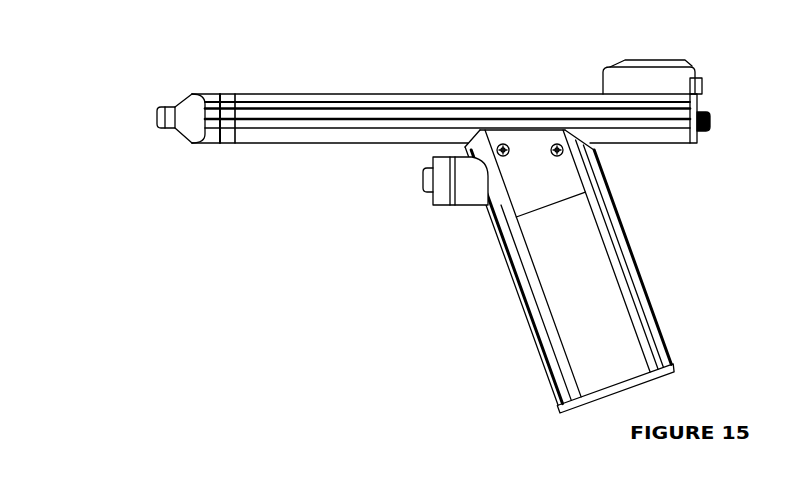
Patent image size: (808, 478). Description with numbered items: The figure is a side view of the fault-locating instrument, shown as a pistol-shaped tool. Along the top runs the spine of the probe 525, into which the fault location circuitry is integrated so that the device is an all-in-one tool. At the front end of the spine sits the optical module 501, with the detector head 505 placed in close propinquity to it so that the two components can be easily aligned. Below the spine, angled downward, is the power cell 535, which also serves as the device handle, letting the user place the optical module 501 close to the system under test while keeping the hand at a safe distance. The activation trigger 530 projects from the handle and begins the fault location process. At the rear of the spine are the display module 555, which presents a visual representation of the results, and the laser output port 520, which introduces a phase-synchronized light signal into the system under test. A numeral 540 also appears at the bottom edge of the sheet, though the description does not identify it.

The optical module 501 is at (167, 110).
The detector head 505 is at (230, 133).
The spine of the probe 525 is at (338, 93).
The display module 555 is at (677, 76).
The laser output port 520 is at (712, 122).
The activation trigger 530 is at (425, 199).
The power cell 535 is at (557, 295).
The cable 540 is at (356, 475).